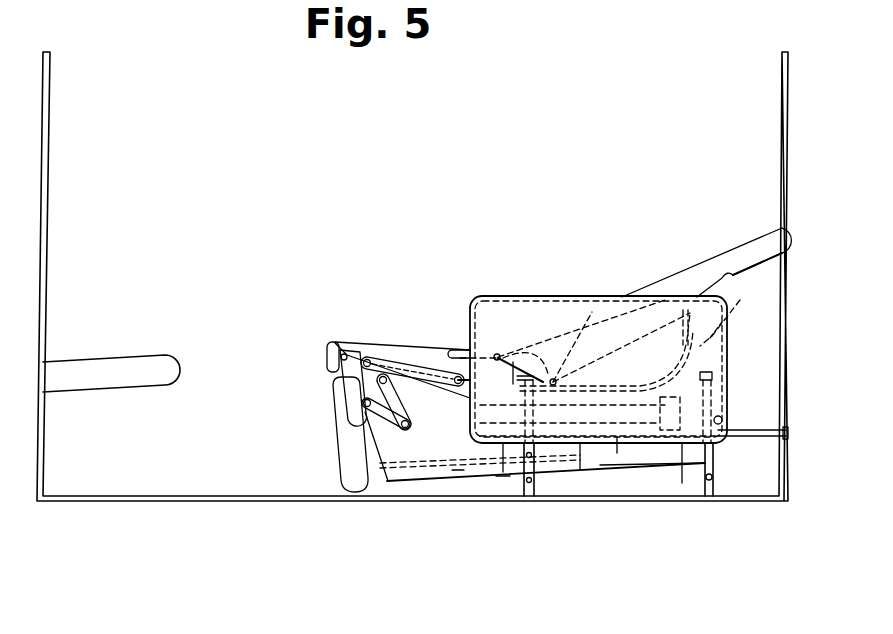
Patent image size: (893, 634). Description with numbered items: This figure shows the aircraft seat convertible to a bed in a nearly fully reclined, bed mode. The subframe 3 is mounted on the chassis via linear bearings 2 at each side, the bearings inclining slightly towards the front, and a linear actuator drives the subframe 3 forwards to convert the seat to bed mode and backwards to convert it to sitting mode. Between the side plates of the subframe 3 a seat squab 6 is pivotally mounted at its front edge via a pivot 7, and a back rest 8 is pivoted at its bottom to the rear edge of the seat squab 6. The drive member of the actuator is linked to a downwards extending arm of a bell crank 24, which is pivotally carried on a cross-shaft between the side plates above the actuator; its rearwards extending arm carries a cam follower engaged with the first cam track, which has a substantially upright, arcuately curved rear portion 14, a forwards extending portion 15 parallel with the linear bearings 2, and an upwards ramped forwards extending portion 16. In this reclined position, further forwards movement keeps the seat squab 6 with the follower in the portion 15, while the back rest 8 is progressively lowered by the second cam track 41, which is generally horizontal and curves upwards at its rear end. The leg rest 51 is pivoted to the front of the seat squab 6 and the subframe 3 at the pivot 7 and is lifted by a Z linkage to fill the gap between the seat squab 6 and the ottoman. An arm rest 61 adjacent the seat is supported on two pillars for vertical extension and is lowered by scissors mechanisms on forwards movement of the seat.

The linear bearings 2 is at (458, 470).
The subframe 3 is at (420, 443).
The seat squab 6 is at (413, 352).
The pivot 7 is at (337, 347).
The back rest 8 is at (699, 278).
The rear portion 14 is at (687, 497).
The forwards extending portion 15 is at (625, 468).
The upwards ramped forwards extending portion 16 is at (572, 470).
The bell crank 24 is at (503, 478).
The second cam track 41 is at (740, 300).
The leg rest 51 is at (348, 450).
The arm rest 61 is at (543, 296).